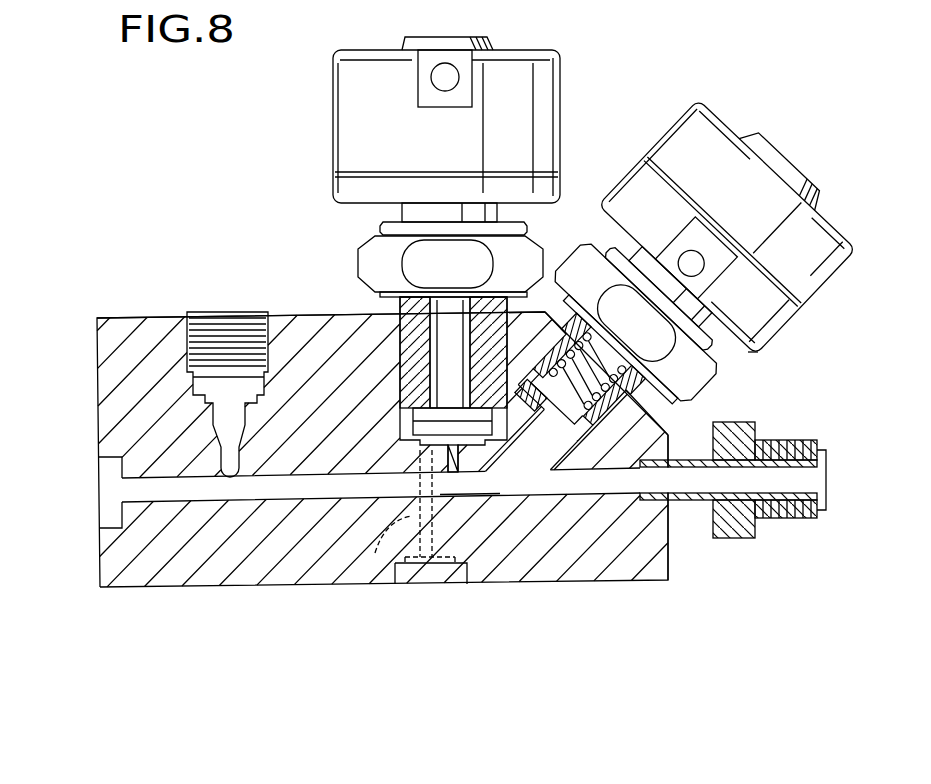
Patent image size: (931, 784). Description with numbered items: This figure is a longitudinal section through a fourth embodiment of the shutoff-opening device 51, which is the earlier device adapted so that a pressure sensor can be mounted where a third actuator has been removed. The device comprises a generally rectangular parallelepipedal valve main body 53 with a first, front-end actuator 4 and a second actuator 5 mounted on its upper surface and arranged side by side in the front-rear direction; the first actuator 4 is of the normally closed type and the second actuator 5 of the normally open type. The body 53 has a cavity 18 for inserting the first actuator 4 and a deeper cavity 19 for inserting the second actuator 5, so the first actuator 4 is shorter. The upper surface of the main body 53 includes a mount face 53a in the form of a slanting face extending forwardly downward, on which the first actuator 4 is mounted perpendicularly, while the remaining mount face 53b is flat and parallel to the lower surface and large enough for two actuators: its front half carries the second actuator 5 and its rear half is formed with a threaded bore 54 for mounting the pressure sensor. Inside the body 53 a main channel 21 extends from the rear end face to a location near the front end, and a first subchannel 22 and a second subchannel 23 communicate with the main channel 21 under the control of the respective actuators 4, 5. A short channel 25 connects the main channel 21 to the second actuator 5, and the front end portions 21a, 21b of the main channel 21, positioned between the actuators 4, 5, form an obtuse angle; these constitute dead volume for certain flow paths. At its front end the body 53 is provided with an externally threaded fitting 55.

The first actuator 4 is at (707, 128).
The second actuator 5 is at (545, 68).
The cavity 18 is at (670, 563).
The cavity 19 is at (412, 352).
The main channel 21 is at (250, 500).
The front end portion of the main channel 21a is at (478, 489).
The front end portion of the main channel 21b is at (514, 470).
The first subchannel 22 is at (614, 424).
The second subchannel 23 is at (375, 553).
The short channel 25 is at (453, 474).
The shutoff-opening device 51 is at (785, 354).
The valve main body 53 is at (115, 372).
The mount face 53a is at (662, 420).
The mount face 53b is at (145, 318).
The threaded bore 54 is at (245, 318).
The fitting 55 is at (782, 521).